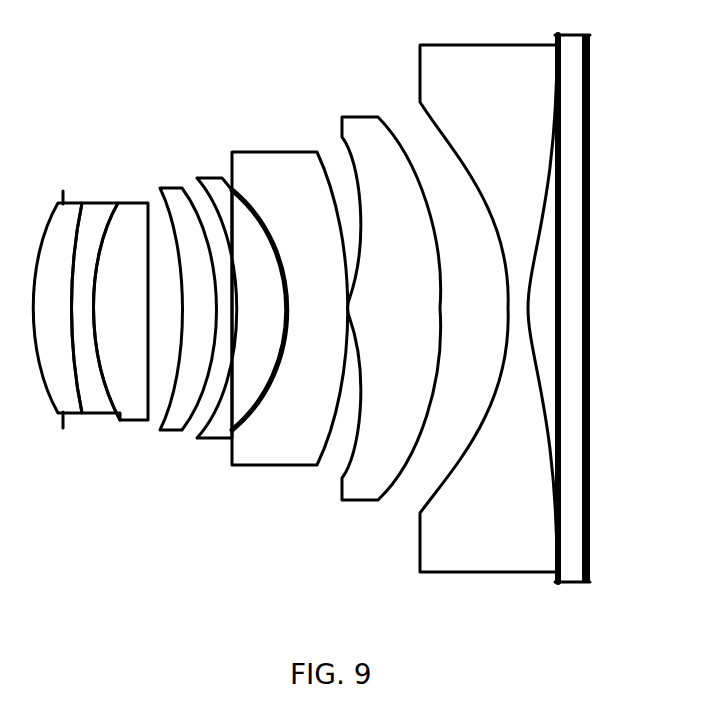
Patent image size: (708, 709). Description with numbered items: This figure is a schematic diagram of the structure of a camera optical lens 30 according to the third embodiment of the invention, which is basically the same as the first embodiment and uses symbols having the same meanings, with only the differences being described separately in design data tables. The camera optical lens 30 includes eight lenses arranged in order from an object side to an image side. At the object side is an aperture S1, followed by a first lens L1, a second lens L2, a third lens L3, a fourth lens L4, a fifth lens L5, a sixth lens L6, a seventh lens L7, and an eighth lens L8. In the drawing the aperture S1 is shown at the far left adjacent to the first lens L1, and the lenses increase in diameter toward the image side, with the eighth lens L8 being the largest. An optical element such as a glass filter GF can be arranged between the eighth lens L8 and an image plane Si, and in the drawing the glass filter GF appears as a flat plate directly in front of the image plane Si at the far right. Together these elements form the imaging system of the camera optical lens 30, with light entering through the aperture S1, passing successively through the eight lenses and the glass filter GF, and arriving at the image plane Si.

The camera optical lens 30 is at (300, 24).
The aperture S1 is at (47, 306).
The first lens L1 is at (59, 298).
The second lens L2 is at (96, 300).
The third lens L3 is at (120, 299).
The fourth lens L4 is at (187, 298).
The fifth lens L5 is at (242, 298).
The sixth lens L6 is at (290, 298).
The seventh lens L7 is at (391, 298).
The eighth lens L8 is at (488, 299).
The glass filter GF is at (571, 298).
The image plane Si is at (590, 296).